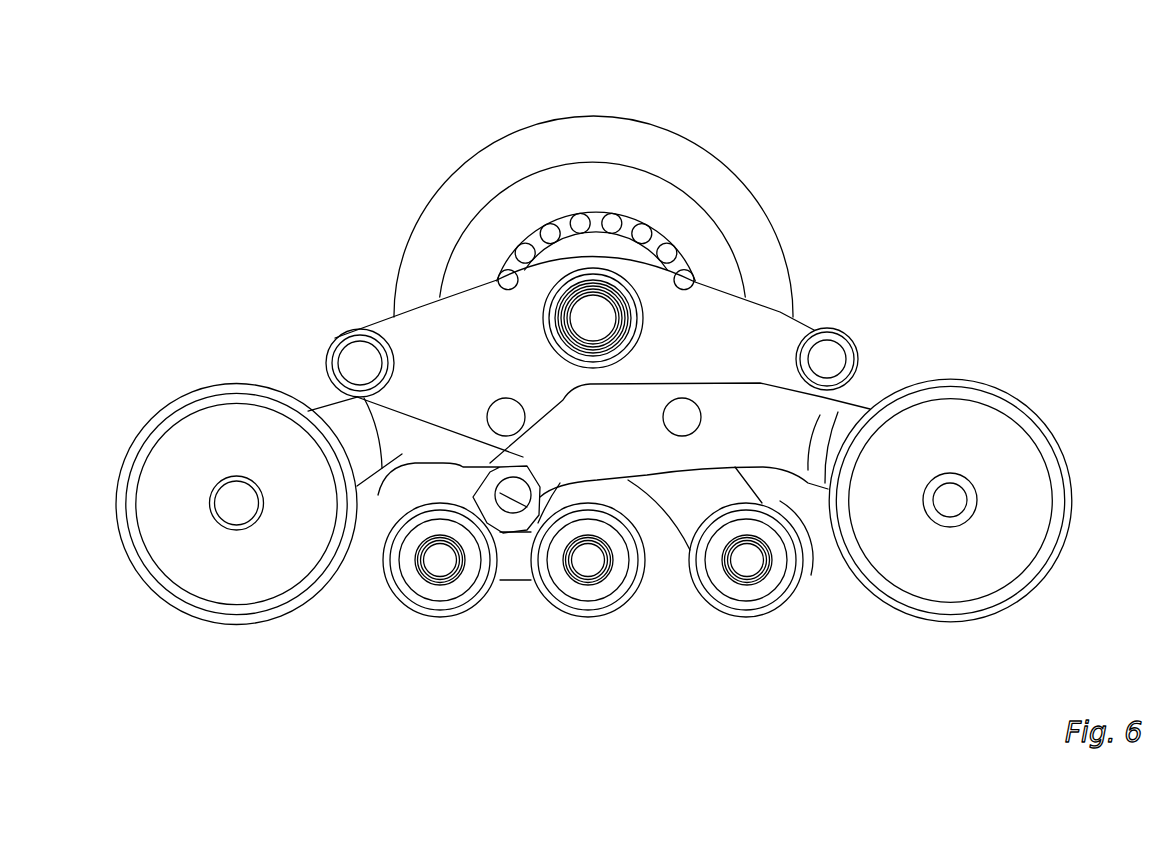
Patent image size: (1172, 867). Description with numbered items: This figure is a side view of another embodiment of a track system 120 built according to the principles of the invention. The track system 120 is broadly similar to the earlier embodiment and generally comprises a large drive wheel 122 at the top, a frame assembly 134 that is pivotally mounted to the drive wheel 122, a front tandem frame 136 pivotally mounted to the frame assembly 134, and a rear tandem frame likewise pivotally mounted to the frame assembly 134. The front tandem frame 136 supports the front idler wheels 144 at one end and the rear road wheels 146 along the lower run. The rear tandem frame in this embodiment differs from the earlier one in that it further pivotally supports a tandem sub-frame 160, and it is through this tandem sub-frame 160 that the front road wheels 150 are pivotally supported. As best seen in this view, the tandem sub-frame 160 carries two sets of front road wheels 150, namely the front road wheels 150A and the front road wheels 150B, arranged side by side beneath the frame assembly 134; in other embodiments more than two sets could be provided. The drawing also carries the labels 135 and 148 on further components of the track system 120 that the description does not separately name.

The track system 120 is at (968, 105).
The drive wheel 122 is at (752, 213).
The frame assembly 134 is at (786, 332).
The plate 135 is at (810, 412).
The front tandem frame 136 is at (382, 478).
The front idler wheels 144 is at (187, 607).
The rear road wheels 146 is at (762, 622).
The right wheel 148 is at (1040, 578).
The front road wheels 150 is at (529, 618).
The front road wheels 150A is at (457, 622).
The front road wheels 150B is at (603, 577).
The tandem sub-frame 160 is at (520, 573).